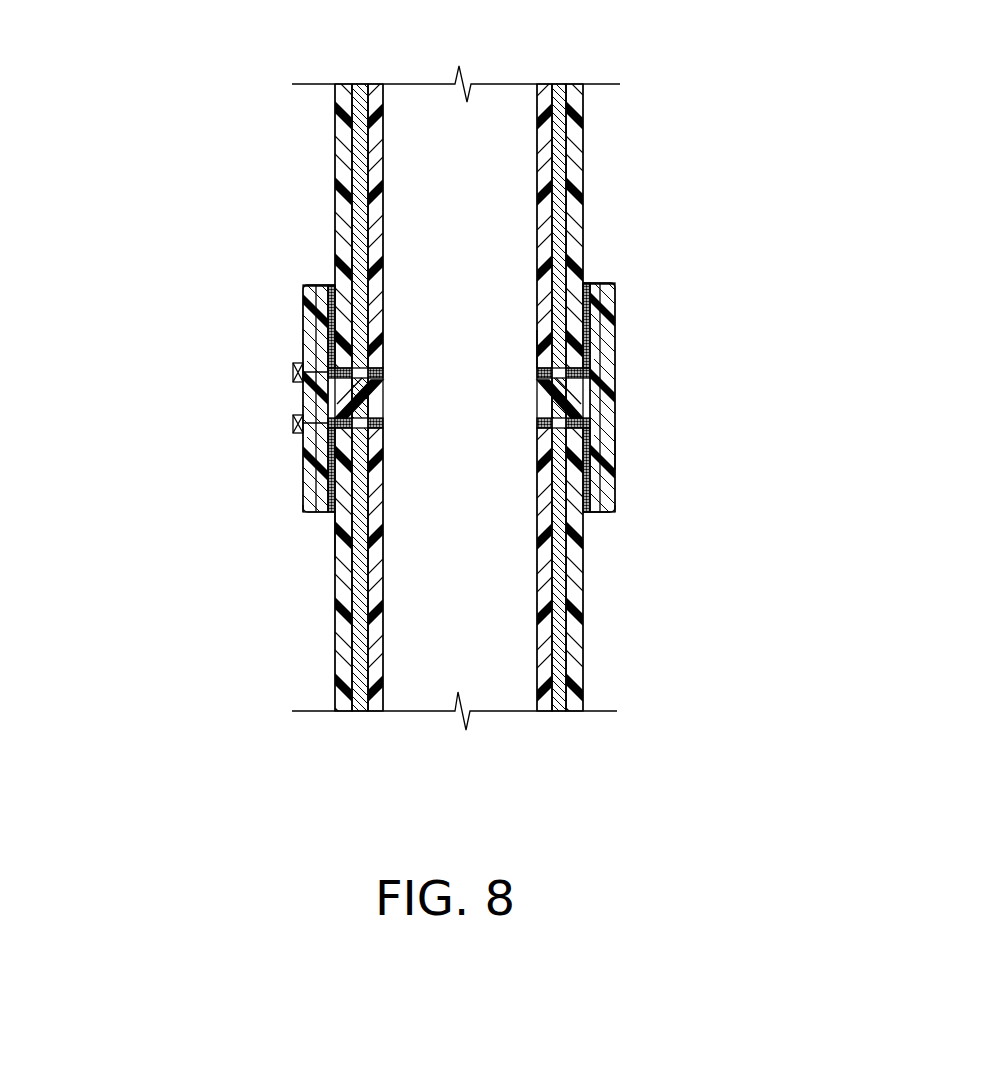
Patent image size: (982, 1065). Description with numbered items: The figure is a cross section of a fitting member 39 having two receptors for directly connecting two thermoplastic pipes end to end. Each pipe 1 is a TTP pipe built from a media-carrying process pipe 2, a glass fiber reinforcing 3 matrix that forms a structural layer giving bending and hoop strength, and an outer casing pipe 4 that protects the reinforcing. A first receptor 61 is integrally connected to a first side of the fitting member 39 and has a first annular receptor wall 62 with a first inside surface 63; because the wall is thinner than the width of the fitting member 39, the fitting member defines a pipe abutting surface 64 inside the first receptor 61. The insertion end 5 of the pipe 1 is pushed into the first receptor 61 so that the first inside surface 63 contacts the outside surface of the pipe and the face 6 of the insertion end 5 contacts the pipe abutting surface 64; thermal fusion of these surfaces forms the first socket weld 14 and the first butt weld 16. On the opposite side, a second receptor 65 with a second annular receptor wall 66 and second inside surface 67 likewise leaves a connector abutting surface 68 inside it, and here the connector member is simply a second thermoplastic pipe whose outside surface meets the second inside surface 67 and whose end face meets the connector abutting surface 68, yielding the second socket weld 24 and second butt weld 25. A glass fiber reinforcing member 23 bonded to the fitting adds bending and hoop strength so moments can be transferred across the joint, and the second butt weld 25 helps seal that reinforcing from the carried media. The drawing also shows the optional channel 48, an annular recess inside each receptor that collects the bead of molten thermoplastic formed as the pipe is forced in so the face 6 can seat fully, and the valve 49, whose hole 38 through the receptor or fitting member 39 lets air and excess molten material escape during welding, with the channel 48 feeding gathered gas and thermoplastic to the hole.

The thermoplastic pipe 1 is at (700, 138).
The process pipe 2 is at (377, 137).
The glass fiber reinforcing 3 is at (363, 172).
The casing pipe 4 is at (342, 109).
The insertion end 5 is at (348, 368).
The face 6 is at (372, 442).
The first socket weld 14 is at (331, 513).
The first butt weld 16 is at (372, 425).
The glass fiber reinforcing member 23 is at (610, 452).
The second socket weld 24 is at (590, 283).
The second butt weld 25 is at (548, 368).
The hole 38 is at (299, 362).
The fitting member 39 is at (588, 393).
The channel 48 is at (330, 345).
The valve 49 is at (292, 423).
The first receptor 61 is at (305, 478).
The first annular receptor wall 62 is at (595, 510).
The first inside surface 63 is at (303, 505).
The pipe abutting surface 64 is at (375, 398).
The second receptor 65 is at (617, 320).
The second annular receptor wall 66 is at (307, 286).
The second inside surface 67 is at (347, 290).
The connector abutting surface 68 is at (382, 373).